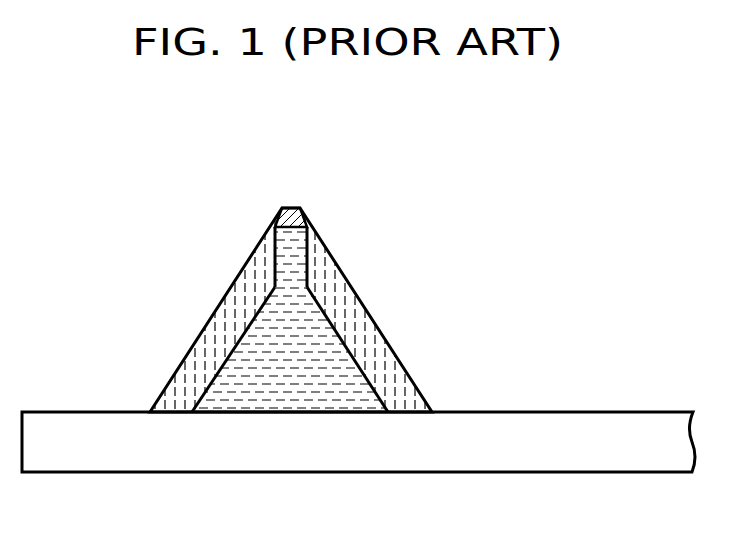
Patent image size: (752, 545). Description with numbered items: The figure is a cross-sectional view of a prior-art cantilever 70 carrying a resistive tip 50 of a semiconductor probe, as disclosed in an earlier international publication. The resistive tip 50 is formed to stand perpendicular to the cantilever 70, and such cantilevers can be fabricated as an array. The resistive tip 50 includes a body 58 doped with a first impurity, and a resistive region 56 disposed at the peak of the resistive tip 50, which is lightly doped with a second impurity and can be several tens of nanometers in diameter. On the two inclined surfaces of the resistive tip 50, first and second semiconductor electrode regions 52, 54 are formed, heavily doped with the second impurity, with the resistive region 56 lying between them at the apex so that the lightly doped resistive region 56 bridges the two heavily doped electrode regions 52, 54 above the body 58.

The resistive tip 50 is at (368, 242).
The first semiconductor electrode region 52 is at (210, 340).
The second semiconductor electrode region 54 is at (375, 333).
The resistive region 56 is at (291, 207).
The body 58 is at (275, 378).
The cantilever 70 is at (595, 430).